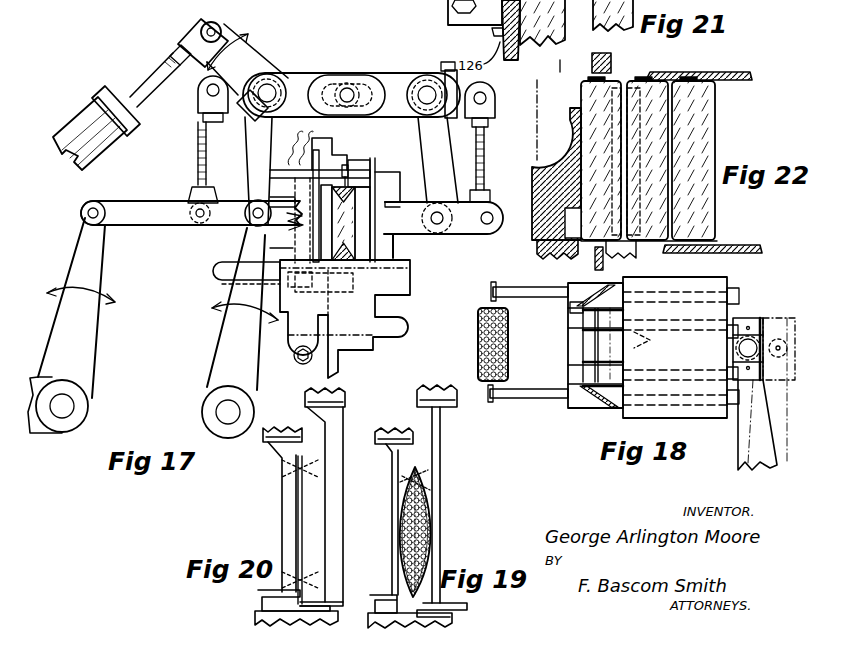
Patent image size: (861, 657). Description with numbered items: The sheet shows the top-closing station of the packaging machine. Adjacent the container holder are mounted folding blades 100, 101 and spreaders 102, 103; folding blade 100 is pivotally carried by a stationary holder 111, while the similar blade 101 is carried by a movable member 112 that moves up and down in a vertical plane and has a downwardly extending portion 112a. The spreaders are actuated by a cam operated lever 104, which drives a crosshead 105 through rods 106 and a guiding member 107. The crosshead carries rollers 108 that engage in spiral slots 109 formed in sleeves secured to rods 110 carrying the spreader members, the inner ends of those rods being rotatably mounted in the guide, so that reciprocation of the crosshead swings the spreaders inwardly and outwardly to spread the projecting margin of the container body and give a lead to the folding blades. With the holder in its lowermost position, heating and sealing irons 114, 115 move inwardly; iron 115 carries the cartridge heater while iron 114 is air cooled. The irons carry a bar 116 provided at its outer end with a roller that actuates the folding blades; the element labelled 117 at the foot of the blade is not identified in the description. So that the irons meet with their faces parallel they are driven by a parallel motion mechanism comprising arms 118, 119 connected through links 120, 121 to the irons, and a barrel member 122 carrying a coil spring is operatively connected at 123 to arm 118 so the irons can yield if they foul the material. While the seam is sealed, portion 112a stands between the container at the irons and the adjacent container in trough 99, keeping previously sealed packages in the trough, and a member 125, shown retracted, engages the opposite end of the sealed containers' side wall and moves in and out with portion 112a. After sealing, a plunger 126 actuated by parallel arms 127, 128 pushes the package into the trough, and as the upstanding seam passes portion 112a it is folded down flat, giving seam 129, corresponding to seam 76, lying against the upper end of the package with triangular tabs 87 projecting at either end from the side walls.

In FIG. 17, the seam 76 is at (338, 217).
In FIG. 17, the triangular tabs 87 is at (353, 253).
In FIG. 22, the trough 99 is at (738, 72).
In FIG. 20, the folding blade 100 is at (280, 497).
In FIG. 19, the folding blade 100 is at (394, 487).
In FIG. 20, the folding blade 101 is at (320, 494).
In FIG. 19, the folding blade 101 is at (440, 470).
In FIG. 19, the spreader 102 is at (428, 481).
In FIG. 18, the spreader 102 is at (493, 292).
In FIG. 17, the spreader 103 is at (345, 319).
In FIG. 19, the spreader 103 is at (428, 558).
In FIG. 18, the spreader 103 is at (495, 402).
In FIG. 18, the cam operated lever 104 is at (760, 424).
In FIG. 18, the crosshead 105 is at (572, 347).
In FIG. 18, the rods 106 is at (650, 340).
In FIG. 18, the guiding member 107 is at (727, 283).
In FIG. 18, the rollers 108 is at (573, 312).
In FIG. 18, the spiral slots 109 is at (598, 290).
In FIG. 17, the rods 110 is at (337, 173).
In FIG. 18, the rods 110 is at (520, 289).
In FIG. 20, the stationary holder 111 is at (262, 443).
In FIG. 19, the stationary holder 111 is at (403, 428).
In FIG. 19, the movable member 112 is at (420, 392).
In FIG. 22, the downwardly extending portion 112a is at (611, 64).
In FIG. 17, the heating and sealing iron 114 is at (382, 172).
In FIG. 17, the heating and sealing iron 115 is at (290, 255).
In FIG. 20, the bar 116 is at (326, 597).
In FIG. 19, the bar 116 is at (445, 605).
In FIG. 20, the foot flange 117 is at (262, 601).
In FIG. 19, the foot flange 117 is at (372, 592).
In FIG. 17, the arm 118 is at (294, 80).
In FIG. 17, the arm 119 is at (400, 80).
In FIG. 17, the link 120 is at (257, 133).
In FIG. 17, the link 121 is at (197, 168).
In FIG. 17, the barrel member 122 is at (78, 118).
In FIG. 17, the connection 123 is at (204, 24).
In FIG. 22, the member 125 is at (594, 260).
In FIG. 22, the plunger 126 is at (566, 132).
In FIG. 17, the parallel arm 127 is at (85, 350).
In FIG. 17, the parallel arm 128 is at (235, 337).
In FIG. 20, the seam 129 is at (298, 535).
In FIG. 22, the seam 129 is at (560, 66).